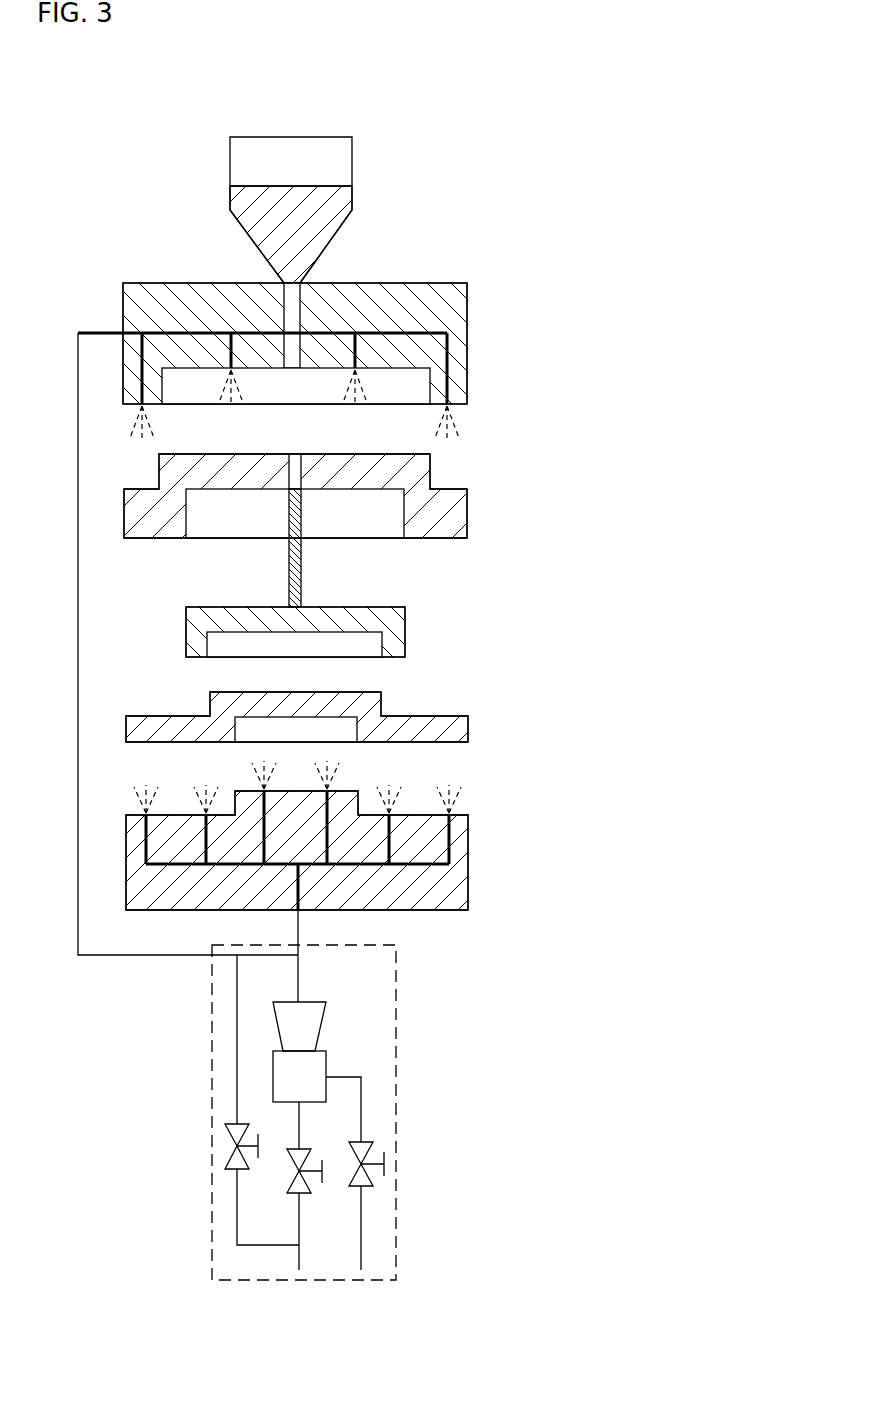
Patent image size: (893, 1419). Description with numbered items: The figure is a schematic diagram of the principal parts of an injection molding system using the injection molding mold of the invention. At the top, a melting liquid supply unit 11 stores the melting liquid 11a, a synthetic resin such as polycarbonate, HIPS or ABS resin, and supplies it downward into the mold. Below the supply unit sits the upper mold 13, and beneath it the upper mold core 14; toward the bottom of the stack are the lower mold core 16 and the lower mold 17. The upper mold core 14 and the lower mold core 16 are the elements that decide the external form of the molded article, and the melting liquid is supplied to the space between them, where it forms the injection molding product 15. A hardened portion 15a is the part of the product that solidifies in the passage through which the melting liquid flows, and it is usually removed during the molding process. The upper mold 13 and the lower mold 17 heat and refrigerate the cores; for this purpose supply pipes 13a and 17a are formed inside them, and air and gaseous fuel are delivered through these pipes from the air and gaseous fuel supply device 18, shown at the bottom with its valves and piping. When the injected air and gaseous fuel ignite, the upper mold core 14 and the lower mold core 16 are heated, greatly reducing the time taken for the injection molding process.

The melting liquid supply unit 11 is at (290, 136).
The melting liquid 11a is at (342, 199).
The upper mold 13 is at (412, 282).
The supply pipe 13a is at (452, 342).
The upper mold core 14 is at (467, 500).
The injection molding product 15 is at (406, 632).
The hardened portion in melting liquid passage 15a is at (301, 582).
The lower mold core 16 is at (468, 714).
The lower mold 17 is at (468, 881).
The supply pipe 17a is at (452, 840).
The air and gaseous fuel supply device 18 is at (397, 1080).